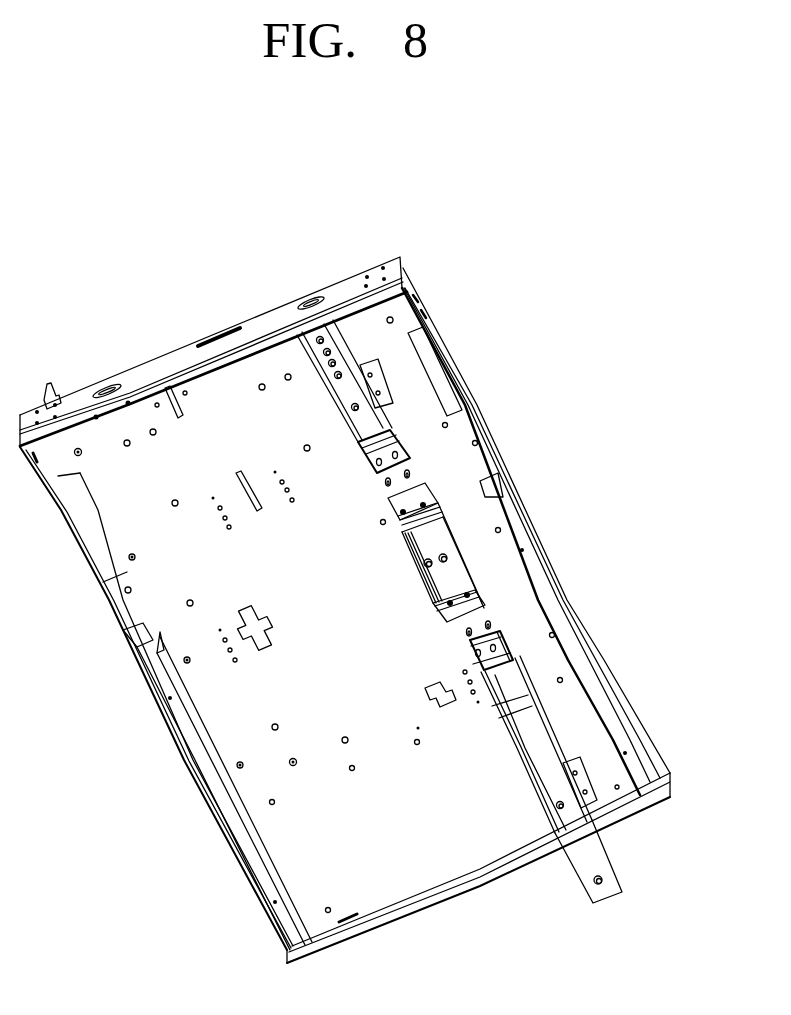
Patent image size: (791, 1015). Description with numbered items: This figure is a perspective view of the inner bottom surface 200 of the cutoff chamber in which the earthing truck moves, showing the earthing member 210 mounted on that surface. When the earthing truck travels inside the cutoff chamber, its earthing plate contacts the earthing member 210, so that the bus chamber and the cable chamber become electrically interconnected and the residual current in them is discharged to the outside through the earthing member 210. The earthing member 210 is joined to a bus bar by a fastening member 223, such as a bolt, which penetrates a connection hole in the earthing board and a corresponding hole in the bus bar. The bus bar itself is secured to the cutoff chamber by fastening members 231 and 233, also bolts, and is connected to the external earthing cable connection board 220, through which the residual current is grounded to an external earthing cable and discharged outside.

The inner bottom surface 200 is at (262, 332).
The earthing member 210 is at (442, 543).
The external earthing cable connection board 220 is at (535, 732).
The fastening member 223 is at (434, 494).
The fastening member 231 is at (410, 471).
The fastening member 233 is at (405, 447).